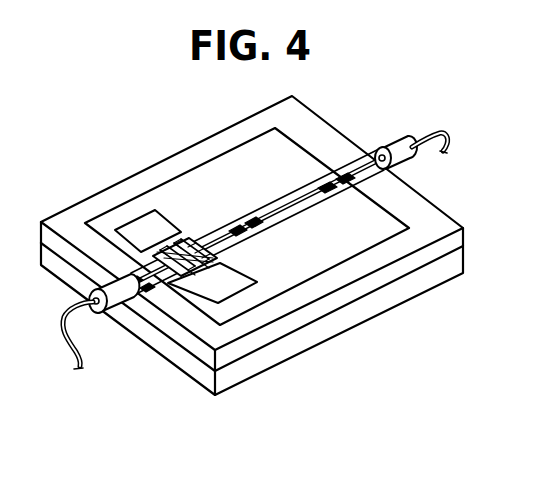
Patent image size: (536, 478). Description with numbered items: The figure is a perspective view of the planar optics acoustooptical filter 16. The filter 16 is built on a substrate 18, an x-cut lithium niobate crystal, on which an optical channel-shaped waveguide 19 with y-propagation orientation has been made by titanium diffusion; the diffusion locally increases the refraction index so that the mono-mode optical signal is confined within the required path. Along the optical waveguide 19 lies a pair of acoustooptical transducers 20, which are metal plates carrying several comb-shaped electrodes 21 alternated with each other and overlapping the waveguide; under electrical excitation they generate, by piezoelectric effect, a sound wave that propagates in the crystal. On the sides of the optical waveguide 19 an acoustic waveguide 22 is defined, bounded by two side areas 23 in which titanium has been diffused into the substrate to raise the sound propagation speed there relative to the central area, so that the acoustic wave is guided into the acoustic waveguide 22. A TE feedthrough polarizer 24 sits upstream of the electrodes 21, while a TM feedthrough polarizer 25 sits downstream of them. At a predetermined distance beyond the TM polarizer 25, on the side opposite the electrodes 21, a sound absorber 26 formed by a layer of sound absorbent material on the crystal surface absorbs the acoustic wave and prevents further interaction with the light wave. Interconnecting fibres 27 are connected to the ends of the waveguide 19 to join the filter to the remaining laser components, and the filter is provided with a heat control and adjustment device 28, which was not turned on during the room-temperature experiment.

The acoustooptical filter 16 is at (252, 233).
The substrate 18 is at (280, 233).
The optical channel-shaped waveguide 19 is at (293, 197).
The acoustooptical transducers 20 is at (150, 222).
The electrodes 21 is at (197, 247).
The acoustic waveguide 22 is at (297, 211).
The side areas 23 is at (240, 150).
The TE feedthrough polarizer 24 is at (112, 270).
The TM feedthrough polarizer 25 is at (258, 237).
The sound absorber 26 is at (337, 175).
The interconnecting fibres 27 is at (252, 242).
The heat control and adjustment device 28 is at (262, 369).